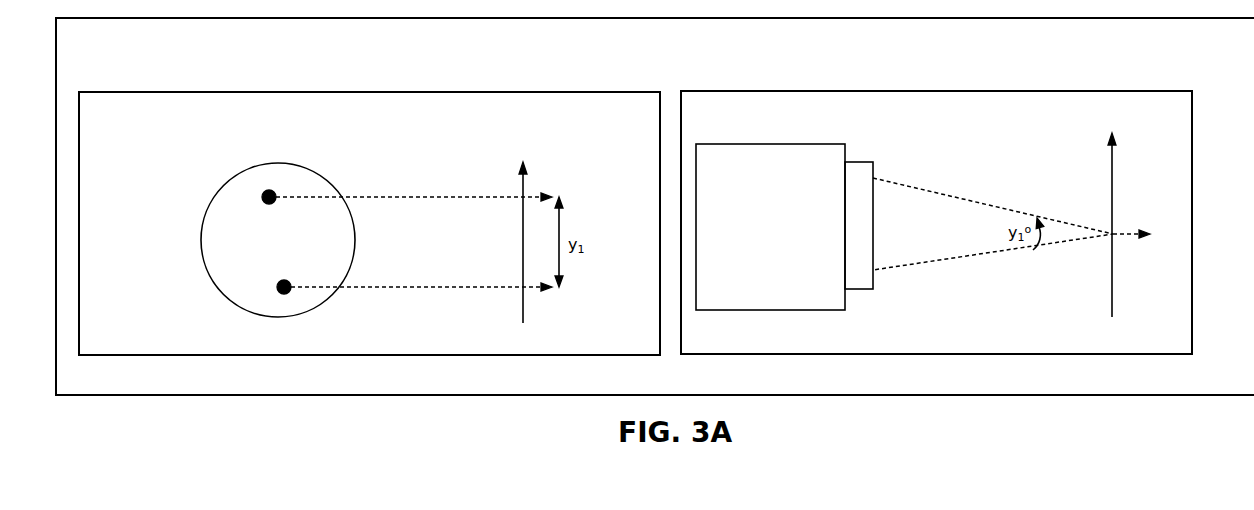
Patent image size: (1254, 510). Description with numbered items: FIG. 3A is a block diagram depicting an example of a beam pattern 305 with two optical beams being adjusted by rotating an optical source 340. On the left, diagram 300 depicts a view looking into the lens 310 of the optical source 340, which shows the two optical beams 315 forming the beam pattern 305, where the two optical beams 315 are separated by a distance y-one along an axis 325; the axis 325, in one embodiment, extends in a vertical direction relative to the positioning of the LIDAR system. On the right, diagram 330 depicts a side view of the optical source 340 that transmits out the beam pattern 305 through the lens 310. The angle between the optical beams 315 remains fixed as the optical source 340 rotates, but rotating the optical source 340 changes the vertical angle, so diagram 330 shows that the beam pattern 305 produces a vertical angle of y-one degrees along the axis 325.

The diagram 300 is at (378, 92).
The diagram 330 is at (933, 91).
The beam pattern 305 is at (955, 133).
The lens 310 is at (292, 318).
The optical beams 315 is at (284, 287).
The axis 325 is at (515, 310).
The optical source 340 is at (770, 227).